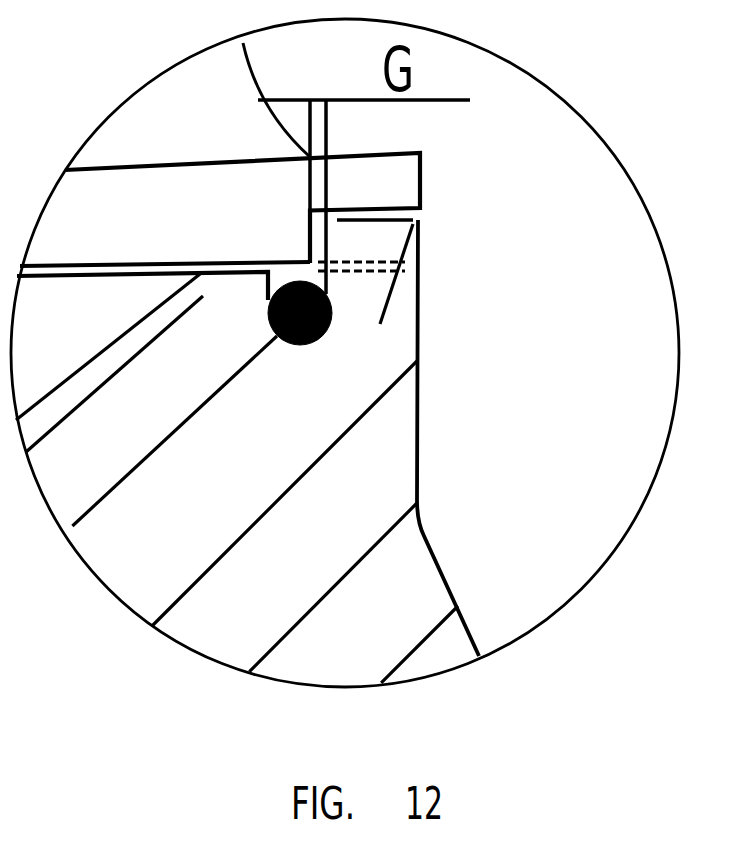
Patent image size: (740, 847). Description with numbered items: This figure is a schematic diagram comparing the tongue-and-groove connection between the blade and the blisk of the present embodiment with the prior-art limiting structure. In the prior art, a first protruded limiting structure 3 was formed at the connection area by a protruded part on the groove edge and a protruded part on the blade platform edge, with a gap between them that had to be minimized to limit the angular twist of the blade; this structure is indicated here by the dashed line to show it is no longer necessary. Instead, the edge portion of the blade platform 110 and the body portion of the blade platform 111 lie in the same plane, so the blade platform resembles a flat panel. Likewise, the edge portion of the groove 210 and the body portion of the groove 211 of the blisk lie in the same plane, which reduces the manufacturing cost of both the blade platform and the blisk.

The first protruded limiting structure 3 is at (324, 303).
The edge portion of the blade platform 110 is at (357, 261).
The body portion of the blade platform 111 is at (220, 263).
The edge portion of the groove 210 is at (375, 272).
The body portion of the groove 211 is at (232, 276).